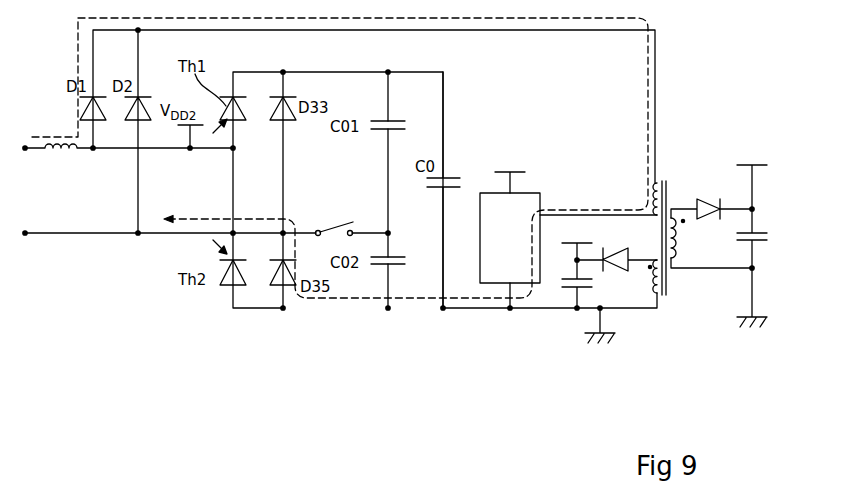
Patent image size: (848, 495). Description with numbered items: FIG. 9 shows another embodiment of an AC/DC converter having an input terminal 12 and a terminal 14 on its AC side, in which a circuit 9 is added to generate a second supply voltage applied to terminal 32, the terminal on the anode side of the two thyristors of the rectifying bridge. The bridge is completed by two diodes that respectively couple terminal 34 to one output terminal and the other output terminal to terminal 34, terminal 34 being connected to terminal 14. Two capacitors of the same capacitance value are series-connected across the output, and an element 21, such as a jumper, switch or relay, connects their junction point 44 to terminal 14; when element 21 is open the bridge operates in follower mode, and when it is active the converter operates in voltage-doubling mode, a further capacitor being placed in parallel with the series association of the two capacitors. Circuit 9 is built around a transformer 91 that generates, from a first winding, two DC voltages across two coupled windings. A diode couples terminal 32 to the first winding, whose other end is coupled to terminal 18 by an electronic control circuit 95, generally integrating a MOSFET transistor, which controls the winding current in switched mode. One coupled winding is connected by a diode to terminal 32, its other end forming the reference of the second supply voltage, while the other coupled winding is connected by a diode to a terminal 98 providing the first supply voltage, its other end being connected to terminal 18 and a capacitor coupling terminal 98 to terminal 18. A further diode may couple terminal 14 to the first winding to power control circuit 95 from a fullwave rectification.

The first input terminal 12 is at (26, 146).
The terminal 14 is at (25, 235).
The terminal 32 is at (232, 150).
The terminal 34 is at (285, 232).
The element 21 is at (333, 226).
The junction point 44 is at (391, 232).
The electronic control circuit 95 is at (539, 191).
The terminal 98 is at (575, 261).
The terminal 18 is at (530, 310).
The circuit 9 is at (692, 146).
The transformer 91 is at (684, 313).